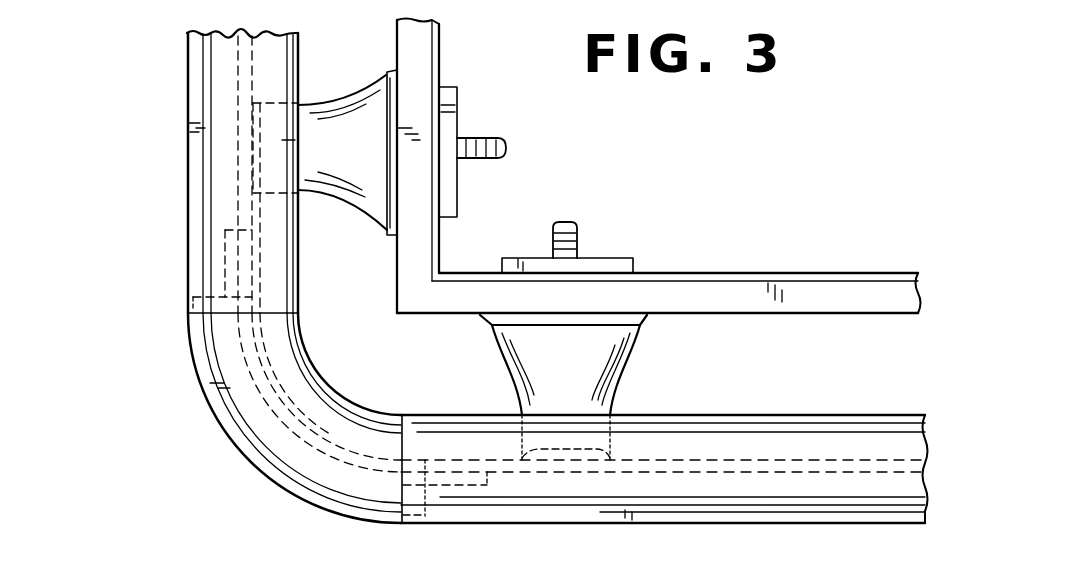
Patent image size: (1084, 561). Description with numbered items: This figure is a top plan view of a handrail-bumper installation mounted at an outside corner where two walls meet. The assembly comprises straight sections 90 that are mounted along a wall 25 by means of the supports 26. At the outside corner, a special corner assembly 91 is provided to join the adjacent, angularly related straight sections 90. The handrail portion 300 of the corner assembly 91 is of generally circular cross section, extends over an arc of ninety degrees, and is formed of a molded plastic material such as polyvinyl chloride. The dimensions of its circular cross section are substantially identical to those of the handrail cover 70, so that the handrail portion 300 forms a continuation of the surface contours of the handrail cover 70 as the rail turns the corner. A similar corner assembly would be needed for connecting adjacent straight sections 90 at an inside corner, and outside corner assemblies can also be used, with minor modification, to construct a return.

The straight sections 90 is at (272, 255).
The handrail cover 70 is at (797, 430).
The corner assembly 91 is at (284, 438).
The handrail portion 300 is at (296, 389).
The wall 25 is at (717, 302).
The supports 26 is at (580, 378).